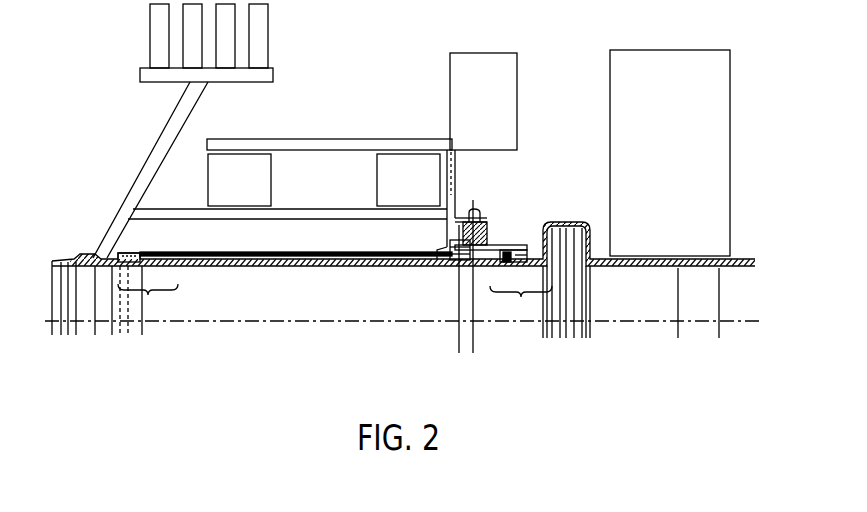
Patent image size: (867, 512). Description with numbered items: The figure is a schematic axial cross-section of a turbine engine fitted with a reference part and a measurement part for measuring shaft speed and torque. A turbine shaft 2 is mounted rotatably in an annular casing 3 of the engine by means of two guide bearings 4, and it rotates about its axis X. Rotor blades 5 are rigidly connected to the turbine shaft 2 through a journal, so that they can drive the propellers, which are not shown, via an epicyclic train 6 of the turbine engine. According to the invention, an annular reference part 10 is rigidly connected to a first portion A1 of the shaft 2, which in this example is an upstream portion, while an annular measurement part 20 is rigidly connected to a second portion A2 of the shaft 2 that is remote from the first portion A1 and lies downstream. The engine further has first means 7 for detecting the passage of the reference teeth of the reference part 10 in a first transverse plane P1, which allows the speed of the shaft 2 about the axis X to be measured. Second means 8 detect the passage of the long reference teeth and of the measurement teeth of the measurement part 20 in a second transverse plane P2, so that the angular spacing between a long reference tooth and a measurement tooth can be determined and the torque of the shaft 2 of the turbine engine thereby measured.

The turbine shaft 2 is at (133, 173).
The annular casing 3 is at (450, 62).
The guide bearings 4 is at (208, 175).
The rotor blades 5 is at (152, 17).
The epicyclic train 6 is at (610, 98).
The first means for detecting 7 is at (436, 279).
The second means for detecting 8 is at (490, 206).
The annular reference part 10 is at (346, 139).
The annular measurement part 20 is at (512, 248).
The first transverse plane P1 is at (459, 343).
The second transverse plane P2 is at (473, 343).
The axis X is at (403, 309).
The first portion A1 is at (148, 299).
The second portion A2 is at (521, 303).